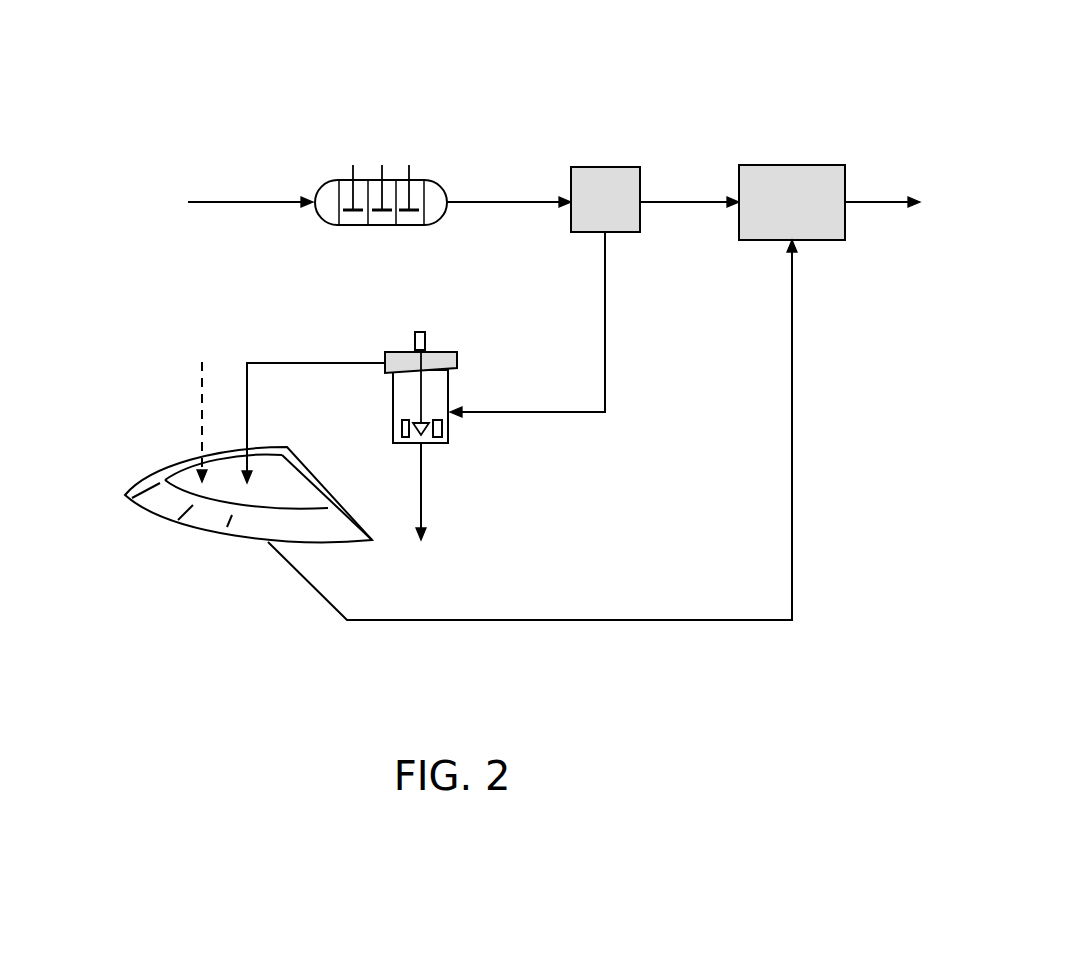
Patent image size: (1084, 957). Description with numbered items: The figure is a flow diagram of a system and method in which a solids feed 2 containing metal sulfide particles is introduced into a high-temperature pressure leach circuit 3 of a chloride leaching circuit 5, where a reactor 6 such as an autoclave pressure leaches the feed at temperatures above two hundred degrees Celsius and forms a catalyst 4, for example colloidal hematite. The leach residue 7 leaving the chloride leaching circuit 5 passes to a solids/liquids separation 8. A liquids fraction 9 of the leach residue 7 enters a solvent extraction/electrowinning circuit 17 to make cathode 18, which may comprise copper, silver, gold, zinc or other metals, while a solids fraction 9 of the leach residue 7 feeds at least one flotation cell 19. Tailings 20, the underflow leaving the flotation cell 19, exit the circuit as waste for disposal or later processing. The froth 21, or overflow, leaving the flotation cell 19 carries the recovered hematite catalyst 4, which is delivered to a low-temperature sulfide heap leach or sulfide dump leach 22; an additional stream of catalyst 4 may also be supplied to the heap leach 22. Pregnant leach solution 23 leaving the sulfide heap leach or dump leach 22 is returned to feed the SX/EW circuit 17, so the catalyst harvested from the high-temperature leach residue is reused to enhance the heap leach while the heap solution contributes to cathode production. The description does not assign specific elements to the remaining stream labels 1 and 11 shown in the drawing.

The process arrangement 1 is at (124, 332).
The solids feed 2 is at (253, 200).
The pressure leach circuit 3 is at (390, 166).
The catalyst 4 is at (248, 395).
The chloride leaching circuit 5 is at (362, 242).
The reactor 6 is at (440, 218).
The leach residue 7 is at (507, 200).
The solids/liquids separation 8 is at (605, 167).
The solids fraction 9 is at (605, 300).
The solution stream 11 is at (690, 200).
The solvent extraction/electrowinning circuit 17 is at (795, 165).
The cathode 18 is at (875, 200).
The flotation cell 19 is at (460, 375).
The tailings 20 is at (423, 480).
The froth 21 is at (316, 353).
The sulfide heap leach or sulfide dump leach 22 is at (143, 480).
The pregnant leach solution 23 is at (615, 620).